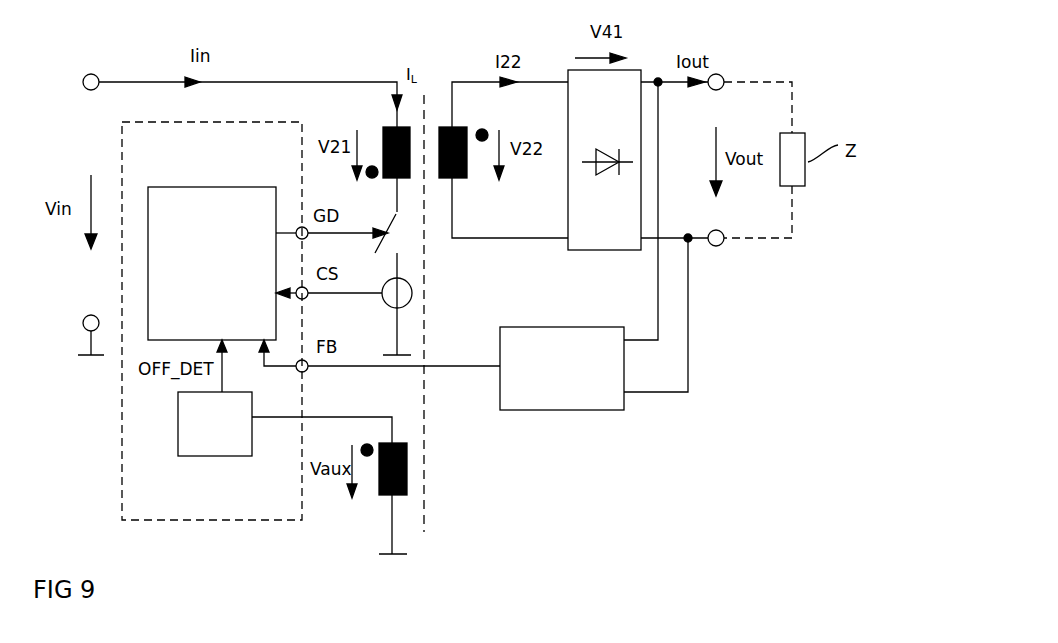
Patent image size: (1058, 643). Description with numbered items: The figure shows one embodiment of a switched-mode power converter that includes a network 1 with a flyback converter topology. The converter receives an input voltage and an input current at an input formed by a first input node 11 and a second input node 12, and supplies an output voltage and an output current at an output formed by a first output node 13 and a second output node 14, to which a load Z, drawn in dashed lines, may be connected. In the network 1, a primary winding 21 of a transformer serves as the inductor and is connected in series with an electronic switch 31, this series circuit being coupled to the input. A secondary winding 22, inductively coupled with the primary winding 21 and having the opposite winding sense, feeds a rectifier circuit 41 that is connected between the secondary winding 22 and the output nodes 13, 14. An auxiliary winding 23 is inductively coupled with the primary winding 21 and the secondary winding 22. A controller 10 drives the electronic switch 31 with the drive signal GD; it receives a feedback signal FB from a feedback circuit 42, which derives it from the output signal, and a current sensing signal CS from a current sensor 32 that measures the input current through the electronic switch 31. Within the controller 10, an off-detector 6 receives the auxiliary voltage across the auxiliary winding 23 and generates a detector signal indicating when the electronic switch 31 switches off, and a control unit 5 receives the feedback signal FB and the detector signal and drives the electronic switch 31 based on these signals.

The network 1 is at (437, 66).
The control unit 5 is at (216, 187).
The off-detector 6 is at (225, 456).
The controller 10 is at (122, 433).
The first input node 11 is at (86, 75).
The second input node 12 is at (84, 318).
The first output node 13 is at (720, 73).
The second output node 14 is at (718, 247).
The primary winding 21 is at (383, 127).
The secondary winding 22 is at (466, 127).
The auxiliary winding 23 is at (385, 497).
The electronic switch 31 is at (388, 216).
The current sensor 32 is at (382, 300).
The rectifier circuit 41 is at (636, 70).
The feedback circuit 42 is at (590, 327).